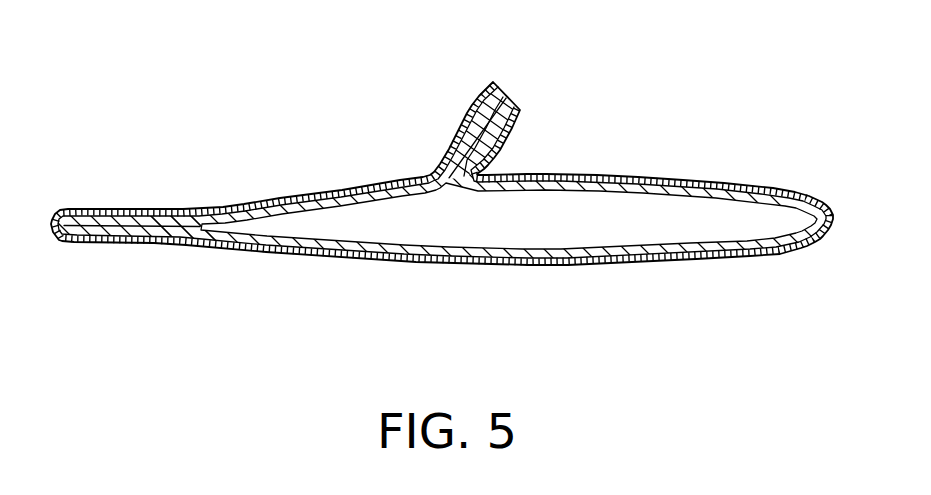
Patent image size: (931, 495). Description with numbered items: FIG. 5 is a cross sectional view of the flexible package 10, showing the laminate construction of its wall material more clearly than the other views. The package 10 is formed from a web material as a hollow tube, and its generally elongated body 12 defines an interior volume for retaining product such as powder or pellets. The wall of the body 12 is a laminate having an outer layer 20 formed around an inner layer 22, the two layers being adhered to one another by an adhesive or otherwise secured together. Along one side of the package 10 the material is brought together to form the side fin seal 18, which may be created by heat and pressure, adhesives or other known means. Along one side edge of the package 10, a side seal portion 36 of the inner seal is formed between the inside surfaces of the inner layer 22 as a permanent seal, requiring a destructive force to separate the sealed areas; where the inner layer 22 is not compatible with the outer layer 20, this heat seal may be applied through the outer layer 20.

The flexible package 10 is at (196, 172).
The body 12 is at (670, 226).
The fin seal 18 is at (508, 127).
The outer layer 20 is at (667, 178).
The inner layer 22 is at (752, 188).
The side portion of the inner seal 36 is at (138, 232).